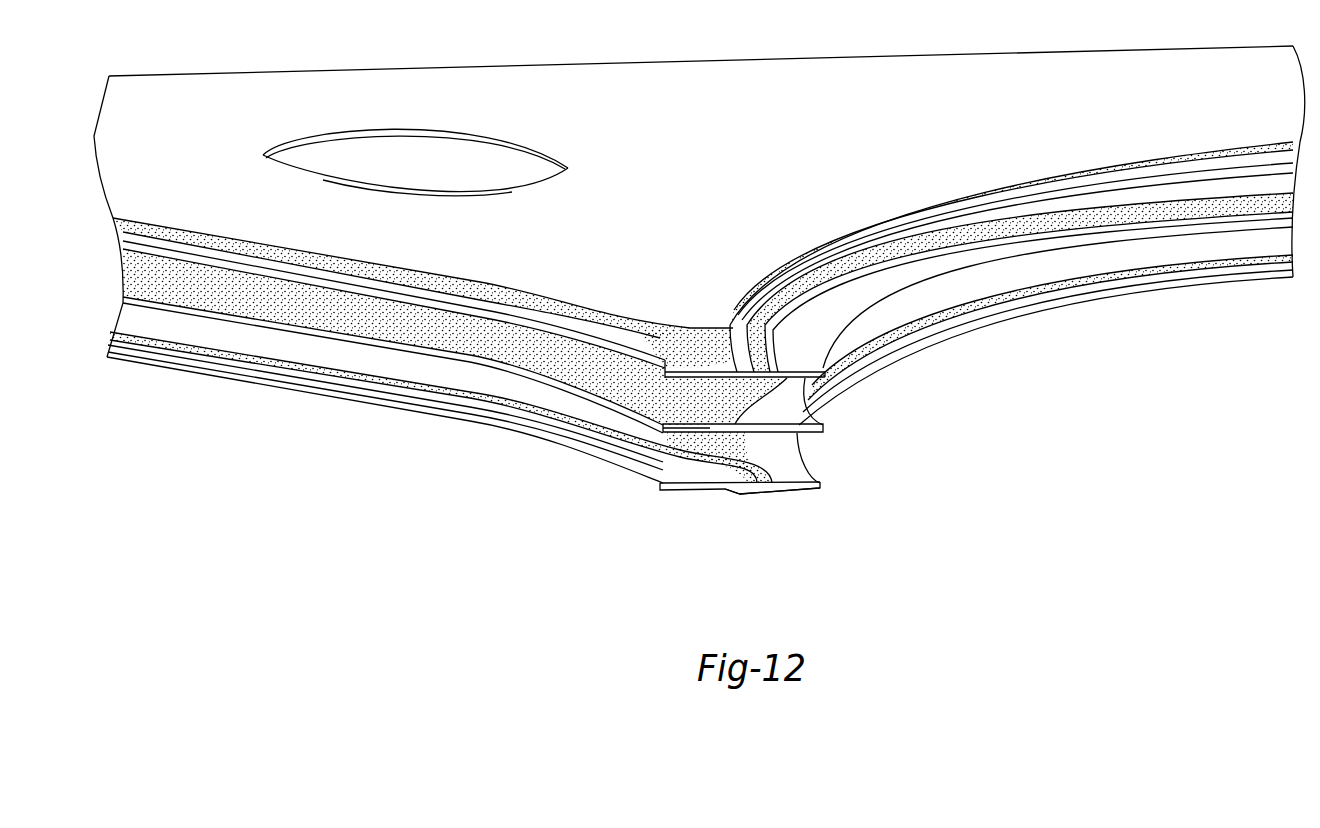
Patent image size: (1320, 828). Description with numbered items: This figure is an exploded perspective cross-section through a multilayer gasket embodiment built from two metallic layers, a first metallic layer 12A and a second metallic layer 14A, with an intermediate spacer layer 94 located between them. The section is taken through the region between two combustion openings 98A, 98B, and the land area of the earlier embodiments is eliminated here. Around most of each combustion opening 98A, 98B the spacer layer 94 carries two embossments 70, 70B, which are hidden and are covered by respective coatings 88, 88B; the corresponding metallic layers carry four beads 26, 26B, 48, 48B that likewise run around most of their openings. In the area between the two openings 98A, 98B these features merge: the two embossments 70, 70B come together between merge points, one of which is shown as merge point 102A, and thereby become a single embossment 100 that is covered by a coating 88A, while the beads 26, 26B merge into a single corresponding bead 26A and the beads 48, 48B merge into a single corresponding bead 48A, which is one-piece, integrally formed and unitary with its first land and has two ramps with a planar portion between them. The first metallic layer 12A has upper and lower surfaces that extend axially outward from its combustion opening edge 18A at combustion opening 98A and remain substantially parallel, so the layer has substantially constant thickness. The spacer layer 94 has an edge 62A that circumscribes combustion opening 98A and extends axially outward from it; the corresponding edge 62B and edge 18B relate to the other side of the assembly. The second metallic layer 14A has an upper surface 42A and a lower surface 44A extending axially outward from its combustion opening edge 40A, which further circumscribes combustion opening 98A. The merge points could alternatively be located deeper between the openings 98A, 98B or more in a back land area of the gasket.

The bead 26 is at (325, 247).
The single corresponding bead 26A is at (726, 340).
The bead 26B is at (930, 203).
The embossment 70 is at (215, 316).
The embossment 70B is at (1093, 243).
The bead 48 is at (300, 367).
The second active bead 48A is at (742, 495).
The bead 48B is at (1007, 288).
The coating 88 is at (425, 330).
The coating 88A is at (720, 422).
The coating 88B is at (1163, 210).
The combustion opening edge 18A is at (520, 378).
The inner skin of second panel 18B is at (823, 368).
The intermediate spacer layer 94 is at (633, 405).
The edge 62A is at (655, 432).
The flange of second panel 62B is at (803, 428).
The second metallic layer 14A is at (648, 460).
The combustion opening edge 40A is at (660, 488).
The lower surface 44A is at (797, 490).
The upper surface 42A is at (797, 466).
The single embossment 100 is at (760, 408).
The merge point 102A is at (695, 328).
The first metallic layer 12A is at (793, 356).
The combustion opening 98A is at (338, 523).
The combustion opening 98B is at (1143, 447).